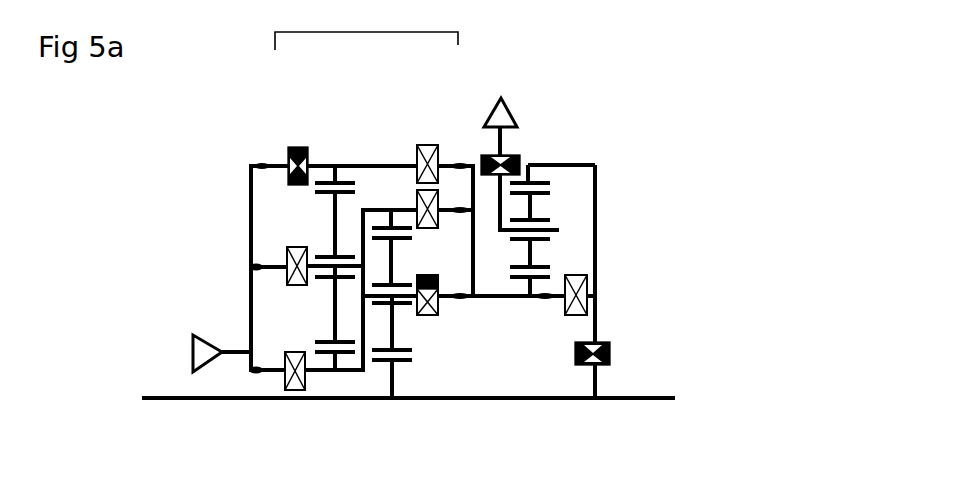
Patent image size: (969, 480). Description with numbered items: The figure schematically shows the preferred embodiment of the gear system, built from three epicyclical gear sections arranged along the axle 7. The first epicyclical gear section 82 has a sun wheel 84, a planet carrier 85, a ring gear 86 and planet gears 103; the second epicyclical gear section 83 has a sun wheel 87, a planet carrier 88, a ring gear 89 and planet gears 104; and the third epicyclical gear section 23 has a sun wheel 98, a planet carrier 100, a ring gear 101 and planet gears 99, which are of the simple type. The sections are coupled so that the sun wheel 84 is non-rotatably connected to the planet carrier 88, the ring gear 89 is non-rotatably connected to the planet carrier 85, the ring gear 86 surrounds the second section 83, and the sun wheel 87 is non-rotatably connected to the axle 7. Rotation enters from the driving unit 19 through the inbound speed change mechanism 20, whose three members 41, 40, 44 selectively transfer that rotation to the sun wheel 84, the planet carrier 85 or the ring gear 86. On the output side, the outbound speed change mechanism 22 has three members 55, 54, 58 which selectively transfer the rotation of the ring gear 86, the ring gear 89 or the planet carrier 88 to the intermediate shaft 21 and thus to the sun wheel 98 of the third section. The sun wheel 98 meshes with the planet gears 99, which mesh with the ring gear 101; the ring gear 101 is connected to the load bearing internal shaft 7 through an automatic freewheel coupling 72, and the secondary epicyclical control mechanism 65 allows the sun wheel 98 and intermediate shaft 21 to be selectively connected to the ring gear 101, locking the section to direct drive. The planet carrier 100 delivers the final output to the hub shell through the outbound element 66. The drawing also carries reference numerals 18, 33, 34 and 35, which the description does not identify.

The axle 7 is at (200, 400).
The transmission 18 is at (366, 27).
The driving unit 19 is at (237, 352).
The inbound speed change mechanism 20 is at (252, 135).
The intermediate shaft 21 is at (485, 300).
The outbound speed change mechanism 22 is at (455, 102).
The third epicyclical gear section 23 is at (540, 87).
The carrier 33 is at (367, 353).
The carrier shaft 34 is at (358, 222).
The gear 35 is at (346, 172).
The member of the inbound speed change mechanism 40 is at (251, 238).
The member of the inbound speed change mechanism 41 is at (262, 376).
The member of the inbound speed change mechanism 44 is at (270, 167).
The member of the outbound speed change mechanism 54 is at (454, 213).
The member of the outbound speed change mechanism 55 is at (450, 166).
The member of the outbound speed change mechanism 58 is at (458, 300).
The secondary epicyclical control mechanism 65 is at (548, 300).
The outbound element 66 is at (557, 228).
The automatic freewheel coupling 72 is at (614, 354).
The first epicyclical gear section 82 is at (336, 87).
The second epicyclical gear section 83 is at (405, 82).
The sun wheel 84 is at (330, 355).
The planet carrier 85 is at (312, 283).
The ring gear 86 is at (323, 175).
The sun wheel 87 is at (405, 362).
The planet carrier 88 is at (417, 317).
The ring gear 89 is at (398, 227).
The sun wheel 98 is at (537, 288).
The planet gears 99 is at (534, 251).
The planet carrier 100 is at (503, 212).
The ring gear 101 is at (537, 182).
The planet gears 103 is at (328, 224).
The planet gears 104 is at (390, 325).